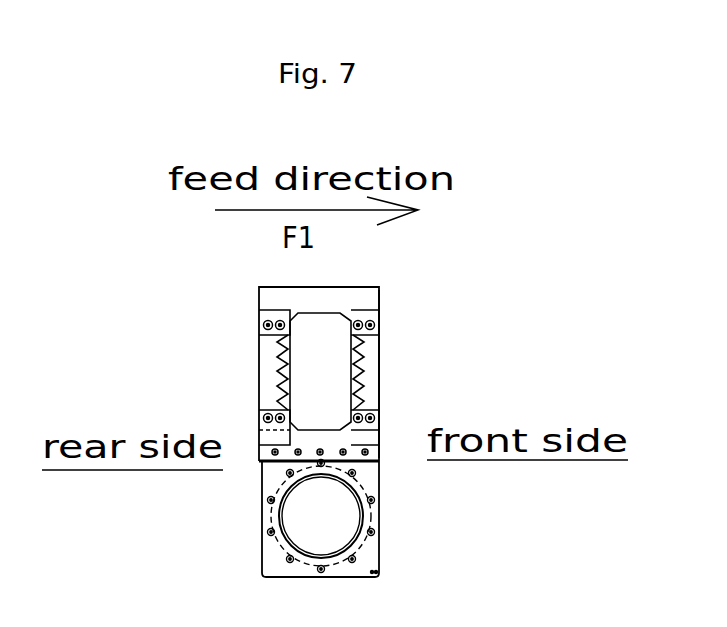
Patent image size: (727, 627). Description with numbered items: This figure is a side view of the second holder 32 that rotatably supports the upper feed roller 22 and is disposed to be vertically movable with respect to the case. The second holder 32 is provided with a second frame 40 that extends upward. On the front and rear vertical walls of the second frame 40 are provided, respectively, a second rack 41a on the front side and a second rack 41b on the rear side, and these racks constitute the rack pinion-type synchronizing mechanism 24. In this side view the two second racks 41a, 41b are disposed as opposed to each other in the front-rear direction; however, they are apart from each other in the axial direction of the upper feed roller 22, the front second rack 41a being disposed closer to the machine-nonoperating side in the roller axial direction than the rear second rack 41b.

The second frame 40 is at (290, 296).
The rack pinion-type synchronizing mechanism 24 is at (383, 352).
The second rack 41a is at (367, 372).
The second rack 41b is at (275, 367).
The upper feed roller 22 is at (358, 488).
The second holder 32 is at (372, 557).